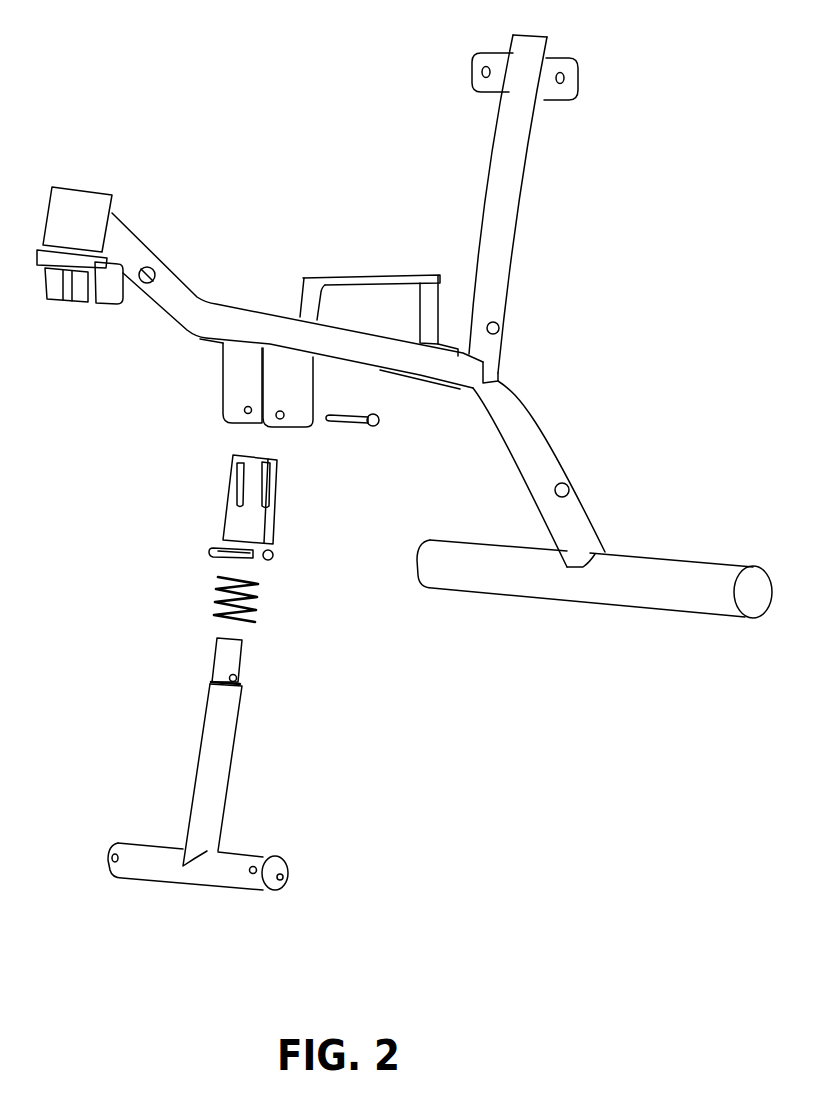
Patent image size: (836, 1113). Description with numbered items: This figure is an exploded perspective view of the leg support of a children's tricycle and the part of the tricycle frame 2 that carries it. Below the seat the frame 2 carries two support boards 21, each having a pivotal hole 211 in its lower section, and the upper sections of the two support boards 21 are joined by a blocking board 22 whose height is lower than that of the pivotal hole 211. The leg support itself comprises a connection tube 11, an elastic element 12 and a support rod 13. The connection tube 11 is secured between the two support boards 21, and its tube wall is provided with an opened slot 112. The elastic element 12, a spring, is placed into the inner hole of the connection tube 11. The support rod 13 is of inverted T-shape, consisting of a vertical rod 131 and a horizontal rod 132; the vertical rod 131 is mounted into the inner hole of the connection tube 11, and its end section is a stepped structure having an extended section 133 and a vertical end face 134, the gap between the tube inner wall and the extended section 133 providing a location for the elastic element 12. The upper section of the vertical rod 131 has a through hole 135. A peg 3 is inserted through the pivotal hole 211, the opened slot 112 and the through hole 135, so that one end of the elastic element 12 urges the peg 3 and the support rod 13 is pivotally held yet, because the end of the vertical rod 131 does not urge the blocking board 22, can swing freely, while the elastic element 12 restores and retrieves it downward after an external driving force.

The tricycle frame 2 is at (523, 415).
The support board 21 is at (283, 372).
The blocking board 22 is at (243, 375).
The pivotal hole 211 is at (247, 413).
The peg 3 is at (380, 421).
The connection tube 11 is at (262, 530).
The opened slot 112 is at (223, 500).
The elastic element 12 is at (252, 603).
The support rod 13 is at (225, 730).
The vertical rod 131 is at (213, 802).
The horizontal rod 132 is at (227, 877).
The extended section 133 is at (220, 648).
The vertical end face 134 is at (212, 677).
The through hole 135 is at (237, 678).